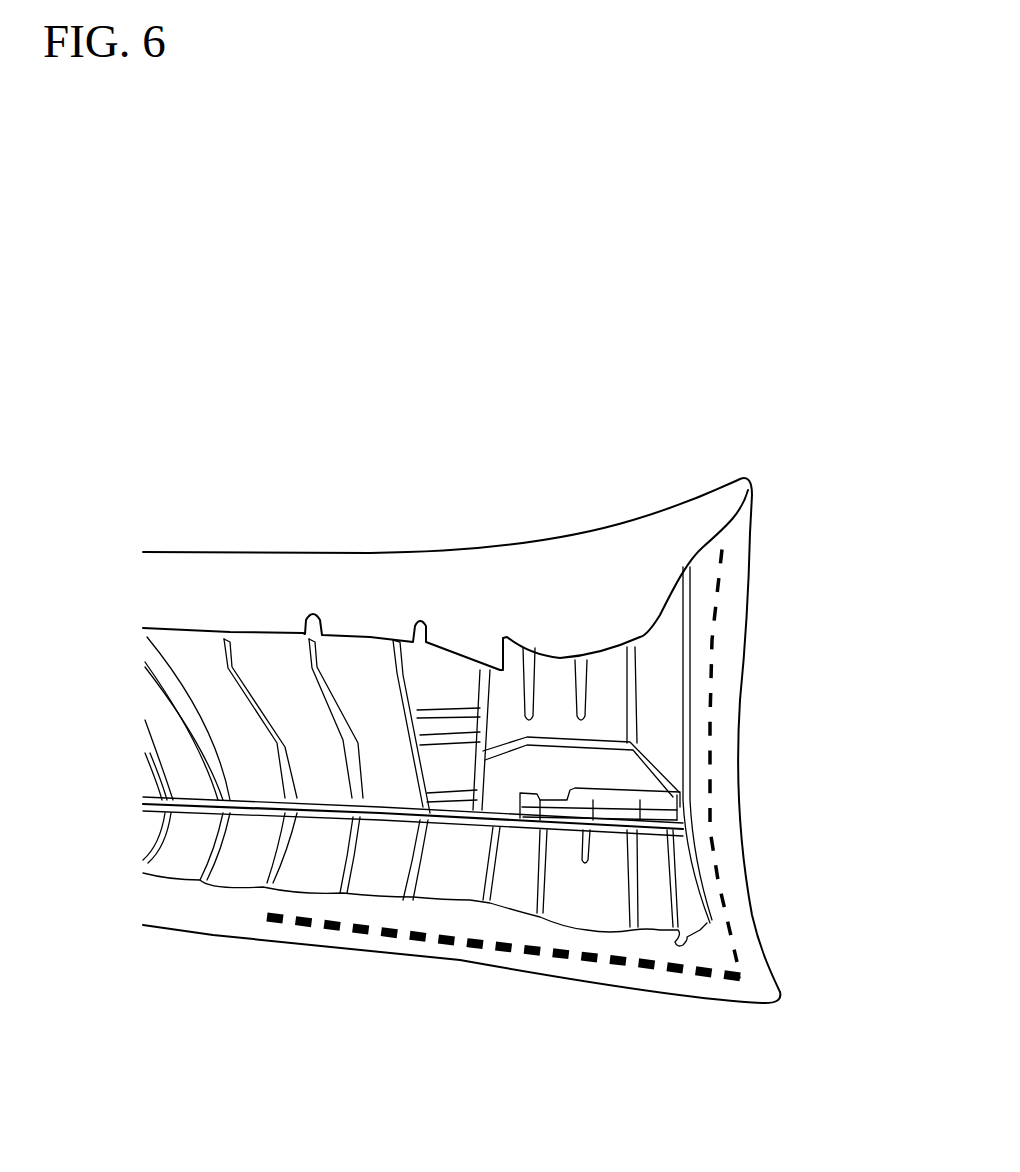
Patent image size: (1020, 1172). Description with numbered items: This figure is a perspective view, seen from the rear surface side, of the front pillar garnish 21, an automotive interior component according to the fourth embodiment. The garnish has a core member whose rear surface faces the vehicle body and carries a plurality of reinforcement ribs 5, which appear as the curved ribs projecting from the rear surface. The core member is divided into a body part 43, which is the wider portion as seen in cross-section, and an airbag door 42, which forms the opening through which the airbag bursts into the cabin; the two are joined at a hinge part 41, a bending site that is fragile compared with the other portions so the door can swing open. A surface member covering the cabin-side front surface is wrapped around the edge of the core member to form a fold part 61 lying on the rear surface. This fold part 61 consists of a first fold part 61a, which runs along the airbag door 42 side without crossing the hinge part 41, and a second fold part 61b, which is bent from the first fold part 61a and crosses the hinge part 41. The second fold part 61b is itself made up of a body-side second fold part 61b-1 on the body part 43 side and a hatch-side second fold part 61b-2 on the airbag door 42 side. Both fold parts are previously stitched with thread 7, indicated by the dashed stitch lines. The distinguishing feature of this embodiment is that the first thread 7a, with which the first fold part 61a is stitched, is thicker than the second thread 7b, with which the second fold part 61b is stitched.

The reinforcement ribs 5 is at (240, 652).
The thread 7 is at (850, 972).
The first thread 7a is at (673, 972).
The second thread 7b is at (737, 953).
The front pillar garnish 21 is at (208, 953).
The hinge part 41 is at (610, 832).
The airbag door 42 is at (447, 883).
The body part 43 is at (442, 677).
The fold part 61 is at (713, 497).
The first fold part 61a is at (523, 960).
The second fold part 61b is at (878, 608).
The body-side second fold part 61b-1 is at (730, 641).
The hatch-side second fold part 61b-2 is at (733, 890).